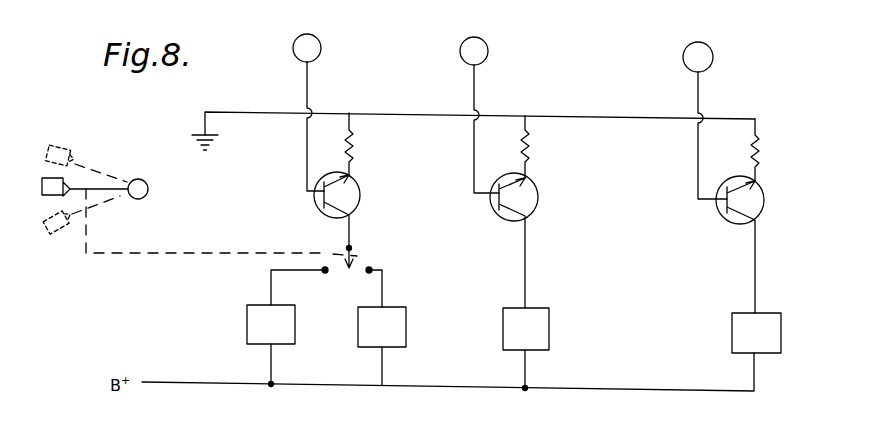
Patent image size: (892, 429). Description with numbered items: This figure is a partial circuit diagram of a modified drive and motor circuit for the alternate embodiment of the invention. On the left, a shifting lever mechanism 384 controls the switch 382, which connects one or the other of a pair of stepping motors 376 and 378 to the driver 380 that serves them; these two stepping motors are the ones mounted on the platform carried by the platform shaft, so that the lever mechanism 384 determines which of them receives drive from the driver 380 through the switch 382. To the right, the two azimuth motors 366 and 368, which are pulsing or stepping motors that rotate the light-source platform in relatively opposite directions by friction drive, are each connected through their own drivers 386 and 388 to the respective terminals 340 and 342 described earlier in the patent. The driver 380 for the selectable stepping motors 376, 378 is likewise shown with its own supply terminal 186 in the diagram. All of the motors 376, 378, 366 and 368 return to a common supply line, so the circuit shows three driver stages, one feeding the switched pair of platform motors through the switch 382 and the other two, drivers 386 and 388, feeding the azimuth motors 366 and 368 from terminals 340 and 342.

The terminal 5 186 is at (321, 46).
The terminal 340 is at (489, 51).
The terminal 342 is at (714, 51).
The driver 380 is at (360, 196).
The driver 386 is at (538, 197).
The driver 388 is at (732, 223).
The switch 382 is at (352, 257).
The stepping motor 376 is at (247, 325).
The stepping motor 378 is at (358, 333).
The azimuth motor 366 is at (503, 330).
The azimuth motor 368 is at (732, 330).
The shifting lever mechanism 384 is at (122, 208).